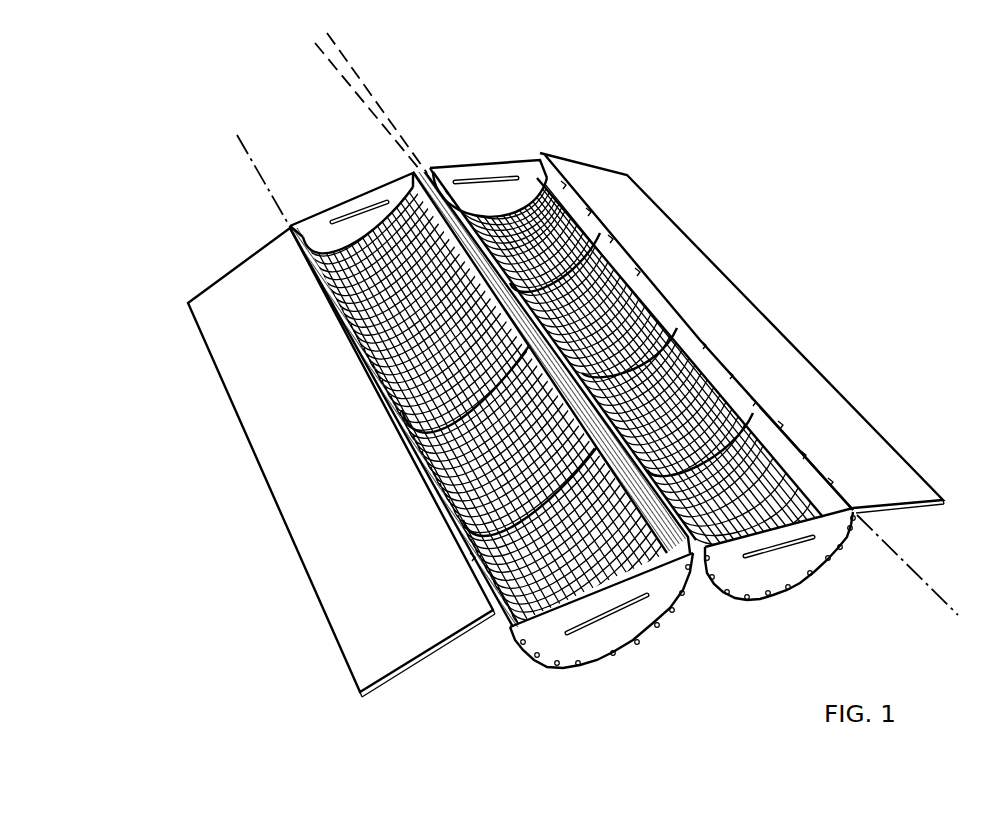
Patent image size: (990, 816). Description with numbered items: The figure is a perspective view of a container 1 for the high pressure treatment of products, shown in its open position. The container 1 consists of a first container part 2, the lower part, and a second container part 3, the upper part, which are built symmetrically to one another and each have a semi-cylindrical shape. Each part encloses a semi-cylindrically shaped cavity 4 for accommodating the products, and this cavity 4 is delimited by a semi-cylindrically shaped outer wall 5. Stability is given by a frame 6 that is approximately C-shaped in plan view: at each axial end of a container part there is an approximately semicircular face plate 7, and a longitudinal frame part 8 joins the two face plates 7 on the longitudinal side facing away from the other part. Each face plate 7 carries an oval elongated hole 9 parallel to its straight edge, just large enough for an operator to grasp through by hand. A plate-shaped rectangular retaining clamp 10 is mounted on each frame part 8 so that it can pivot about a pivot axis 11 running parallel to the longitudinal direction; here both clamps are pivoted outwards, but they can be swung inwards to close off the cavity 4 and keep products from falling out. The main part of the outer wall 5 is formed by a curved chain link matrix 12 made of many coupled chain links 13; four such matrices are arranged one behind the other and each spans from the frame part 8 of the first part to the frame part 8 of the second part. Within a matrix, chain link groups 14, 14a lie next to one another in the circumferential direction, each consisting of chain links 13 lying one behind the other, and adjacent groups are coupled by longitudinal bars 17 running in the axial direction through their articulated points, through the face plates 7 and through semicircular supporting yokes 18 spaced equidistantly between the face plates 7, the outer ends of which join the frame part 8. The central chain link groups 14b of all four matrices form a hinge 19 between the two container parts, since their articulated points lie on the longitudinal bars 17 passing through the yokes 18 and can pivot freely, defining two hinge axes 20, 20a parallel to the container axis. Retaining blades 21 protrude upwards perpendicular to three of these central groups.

The container 1 is at (165, 178).
The first container part 2 is at (333, 165).
The second container part 3 is at (479, 135).
The cavity 4 is at (337, 248).
The outer wall 5 is at (510, 627).
The frame 6 is at (745, 390).
The face plate 7 is at (571, 426).
The longitudinal frame part 8 is at (792, 405).
The elongated hole 9 is at (357, 212).
The retaining clamp 10 is at (268, 452).
The pivot axis 11 is at (277, 215).
The chain link matrix 12 is at (588, 212).
The chain link 13 is at (688, 332).
The chain link group 14 is at (527, 655).
The second chain link group 14a is at (582, 602).
The central chain link group 14b is at (680, 347).
The longitudinal bar 17 is at (813, 573).
The supporting yoke 18 is at (458, 528).
The hinge 19 is at (680, 347).
The hinge axis 20 is at (330, 62).
The second hinge axis 20a is at (357, 76).
The retaining blade 21 is at (636, 259).